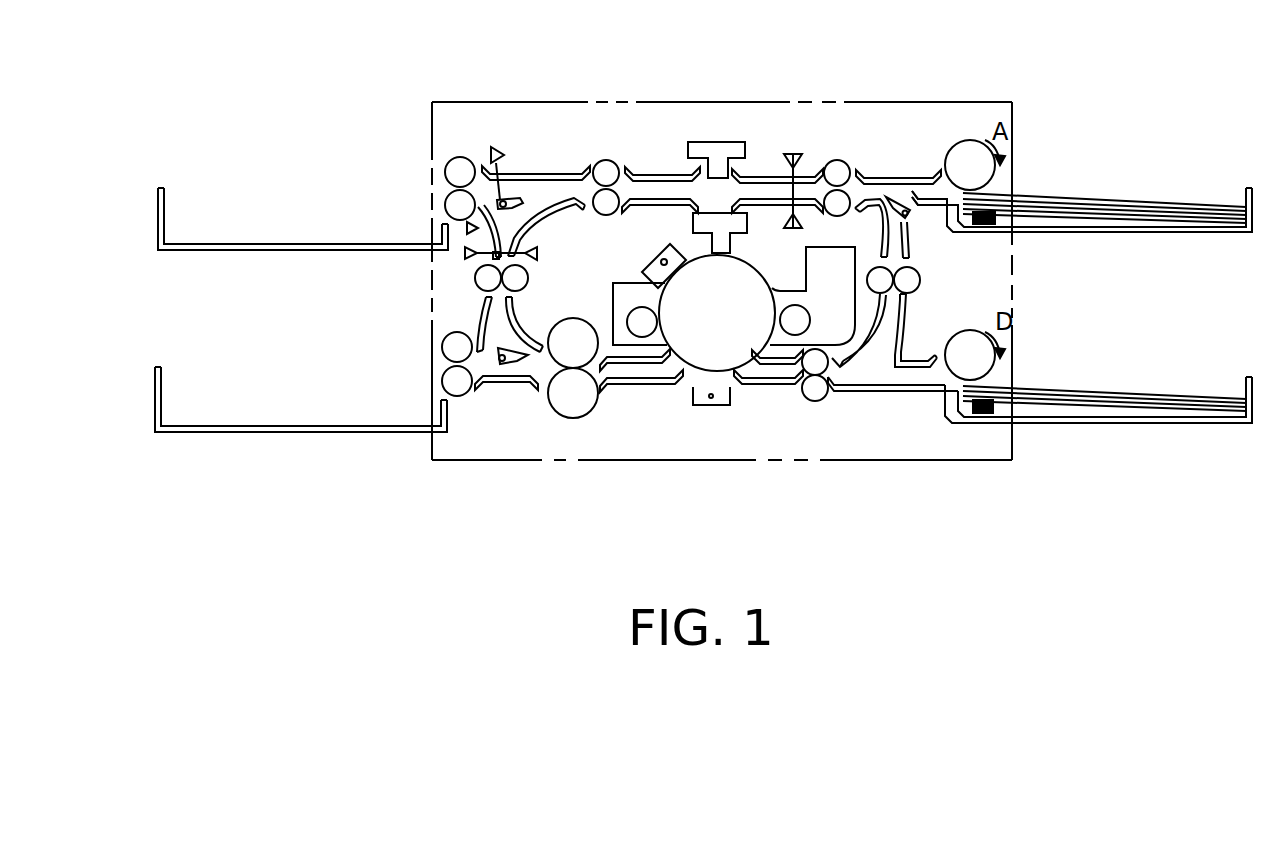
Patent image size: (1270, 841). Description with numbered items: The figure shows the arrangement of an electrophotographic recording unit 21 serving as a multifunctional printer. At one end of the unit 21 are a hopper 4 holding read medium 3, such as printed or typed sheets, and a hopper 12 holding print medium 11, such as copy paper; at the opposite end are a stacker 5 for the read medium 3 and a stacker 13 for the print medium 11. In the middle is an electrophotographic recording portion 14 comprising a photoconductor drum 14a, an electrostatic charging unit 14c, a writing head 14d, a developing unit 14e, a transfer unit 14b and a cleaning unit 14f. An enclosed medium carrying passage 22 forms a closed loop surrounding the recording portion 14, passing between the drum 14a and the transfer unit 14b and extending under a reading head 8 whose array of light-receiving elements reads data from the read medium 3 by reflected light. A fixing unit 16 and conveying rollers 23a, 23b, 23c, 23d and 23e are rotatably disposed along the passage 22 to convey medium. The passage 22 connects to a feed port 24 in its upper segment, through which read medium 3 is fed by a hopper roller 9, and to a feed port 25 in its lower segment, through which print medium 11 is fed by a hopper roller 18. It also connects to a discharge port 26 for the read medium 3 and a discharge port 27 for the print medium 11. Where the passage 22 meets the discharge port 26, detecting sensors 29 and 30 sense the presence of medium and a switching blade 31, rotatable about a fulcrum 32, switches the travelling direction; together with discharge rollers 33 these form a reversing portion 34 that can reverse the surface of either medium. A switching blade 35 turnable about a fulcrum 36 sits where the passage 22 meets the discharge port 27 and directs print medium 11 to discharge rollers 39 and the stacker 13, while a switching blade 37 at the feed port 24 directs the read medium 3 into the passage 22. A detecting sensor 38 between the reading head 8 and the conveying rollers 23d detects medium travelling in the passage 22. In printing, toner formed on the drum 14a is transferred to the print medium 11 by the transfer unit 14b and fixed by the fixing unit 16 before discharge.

The read medium 3 is at (1198, 203).
The hopper 4 is at (1200, 235).
The stacker 5 is at (255, 250).
The reading head 8 is at (715, 142).
The hopper roller 9 is at (955, 148).
The print medium 11 is at (1163, 390).
The hopper 12 is at (1148, 423).
The stacker 13 is at (262, 432).
The electrophotographic recording portion 14 is at (652, 285).
The photoconductor drum 14a is at (770, 262).
The transfer unit 14b is at (715, 405).
The electrostatic charging unit 14c is at (660, 247).
The writing head 14d is at (702, 220).
The developing unit 14e is at (808, 248).
The cleaning unit 14f is at (613, 300).
The fixing unit 16 is at (598, 412).
The hopper roller 18 is at (972, 325).
The electrophotographic recording unit 21 is at (934, 102).
The enclosed medium carrying passage 22 is at (896, 322).
The conveying rollers 23a is at (817, 402).
The conveying rollers 23b is at (475, 278).
The conveying rollers 23c is at (606, 160).
The conveying rollers 23d is at (837, 160).
The conveying rollers 23e is at (915, 272).
The feed port 24 is at (947, 190).
The feed port 25 is at (940, 388).
The discharge port 26 is at (452, 188).
The discharge port 27 is at (442, 350).
The detecting sensor 29 is at (495, 148).
The detecting sensor 30 is at (537, 254).
The switching blade 31 is at (525, 200).
The fulcrum 32 is at (530, 222).
The discharge rollers 33 is at (450, 157).
The reversing portion 34 is at (503, 195).
The switching blade 35 is at (518, 382).
The fulcrum 36 is at (498, 365).
The switching blade 37 is at (904, 210).
The detecting sensor 38 is at (793, 154).
The discharge rollers 39 is at (442, 383).